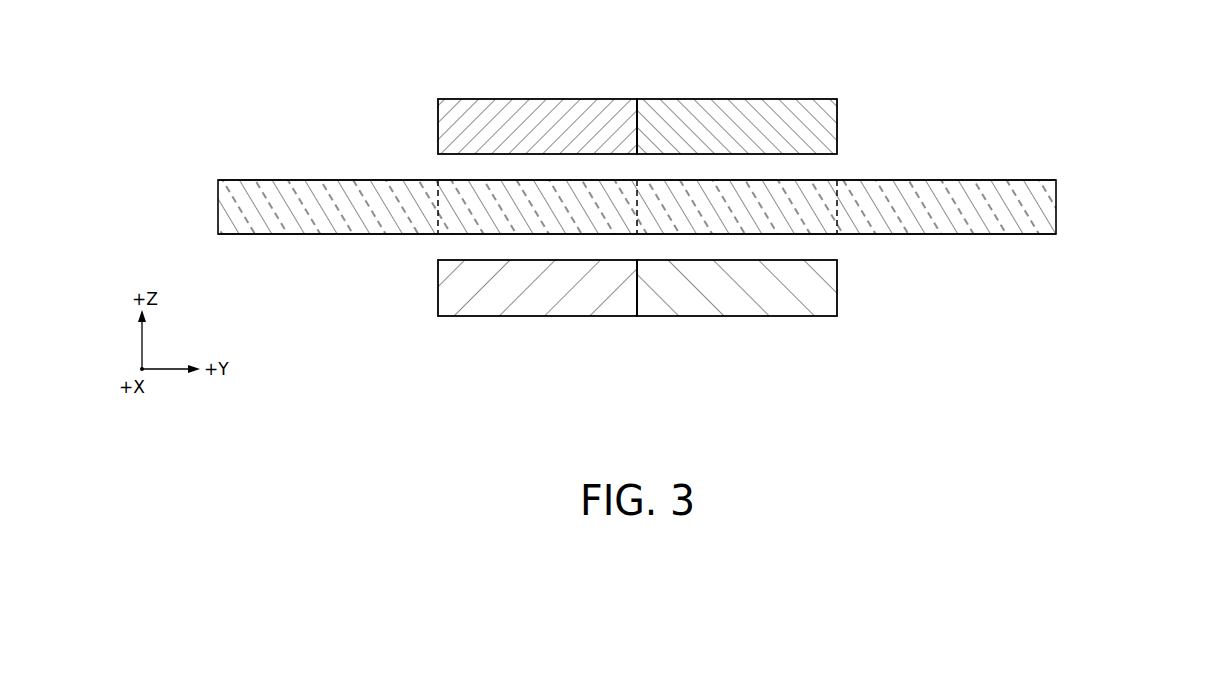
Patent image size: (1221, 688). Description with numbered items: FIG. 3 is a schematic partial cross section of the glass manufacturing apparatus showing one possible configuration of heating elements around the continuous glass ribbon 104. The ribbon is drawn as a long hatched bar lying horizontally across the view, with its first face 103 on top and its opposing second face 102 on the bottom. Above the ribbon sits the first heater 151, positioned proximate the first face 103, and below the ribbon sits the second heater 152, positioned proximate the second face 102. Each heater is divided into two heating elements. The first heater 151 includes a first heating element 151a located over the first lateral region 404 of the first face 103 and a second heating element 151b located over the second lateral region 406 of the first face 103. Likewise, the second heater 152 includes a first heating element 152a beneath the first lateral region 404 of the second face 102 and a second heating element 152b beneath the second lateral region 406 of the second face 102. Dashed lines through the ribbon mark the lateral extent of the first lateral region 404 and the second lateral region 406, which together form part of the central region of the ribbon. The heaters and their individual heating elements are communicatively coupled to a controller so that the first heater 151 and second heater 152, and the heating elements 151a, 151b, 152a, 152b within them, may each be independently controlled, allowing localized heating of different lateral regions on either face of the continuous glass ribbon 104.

The second face 102 is at (960, 234).
The first face 103 is at (947, 180).
The continuous glass ribbon 104 is at (705, 209).
The first heater 151 is at (697, 87).
The first heating element 151a is at (542, 108).
The second heating element 151b is at (745, 108).
The second heater 152 is at (701, 327).
The first heating element 152a is at (545, 305).
The second heating element 152b is at (748, 305).
The first lateral region 404 is at (628, 215).
The second lateral region 406 is at (828, 199).